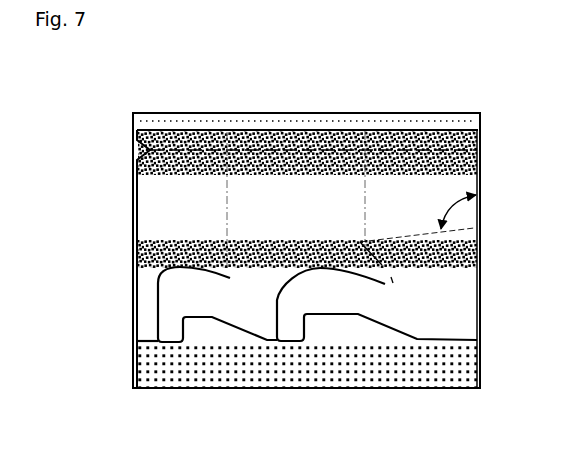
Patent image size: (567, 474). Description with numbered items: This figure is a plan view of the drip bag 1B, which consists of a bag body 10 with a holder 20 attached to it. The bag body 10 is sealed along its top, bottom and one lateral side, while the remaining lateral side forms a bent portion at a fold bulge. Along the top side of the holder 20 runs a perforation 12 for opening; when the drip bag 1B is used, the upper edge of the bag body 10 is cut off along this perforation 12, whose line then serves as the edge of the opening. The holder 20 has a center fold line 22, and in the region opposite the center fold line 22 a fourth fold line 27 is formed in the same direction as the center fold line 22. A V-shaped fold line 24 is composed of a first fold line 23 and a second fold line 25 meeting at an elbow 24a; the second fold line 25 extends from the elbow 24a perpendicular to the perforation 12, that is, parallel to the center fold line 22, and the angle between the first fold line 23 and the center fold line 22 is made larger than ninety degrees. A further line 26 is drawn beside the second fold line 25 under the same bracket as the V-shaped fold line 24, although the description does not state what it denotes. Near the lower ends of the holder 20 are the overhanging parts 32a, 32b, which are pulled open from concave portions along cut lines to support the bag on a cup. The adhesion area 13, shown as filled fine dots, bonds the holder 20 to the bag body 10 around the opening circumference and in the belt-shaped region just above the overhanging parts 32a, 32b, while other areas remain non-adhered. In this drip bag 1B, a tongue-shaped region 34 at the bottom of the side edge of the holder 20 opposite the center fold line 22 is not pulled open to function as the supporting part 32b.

The drip bag 1B is at (95, 126).
The bag body 10 is at (470, 367).
The perforation 12 is at (237, 150).
The adhesion area 13 is at (180, 247).
The holder 20 is at (162, 217).
The center fold line 22 is at (480, 265).
The first fold line 23 is at (457, 231).
The V-shaped fold line 24 is at (435, 64).
The elbow 24a is at (360, 241).
The second fold line 25 is at (365, 197).
The second reflecting portion 26 is at (383, 264).
The fourth fold line 27 is at (226, 202).
The overhanging part 32a is at (330, 298).
The overhanging part 32b is at (195, 300).
The tongue-shaped region 34 is at (146, 336).